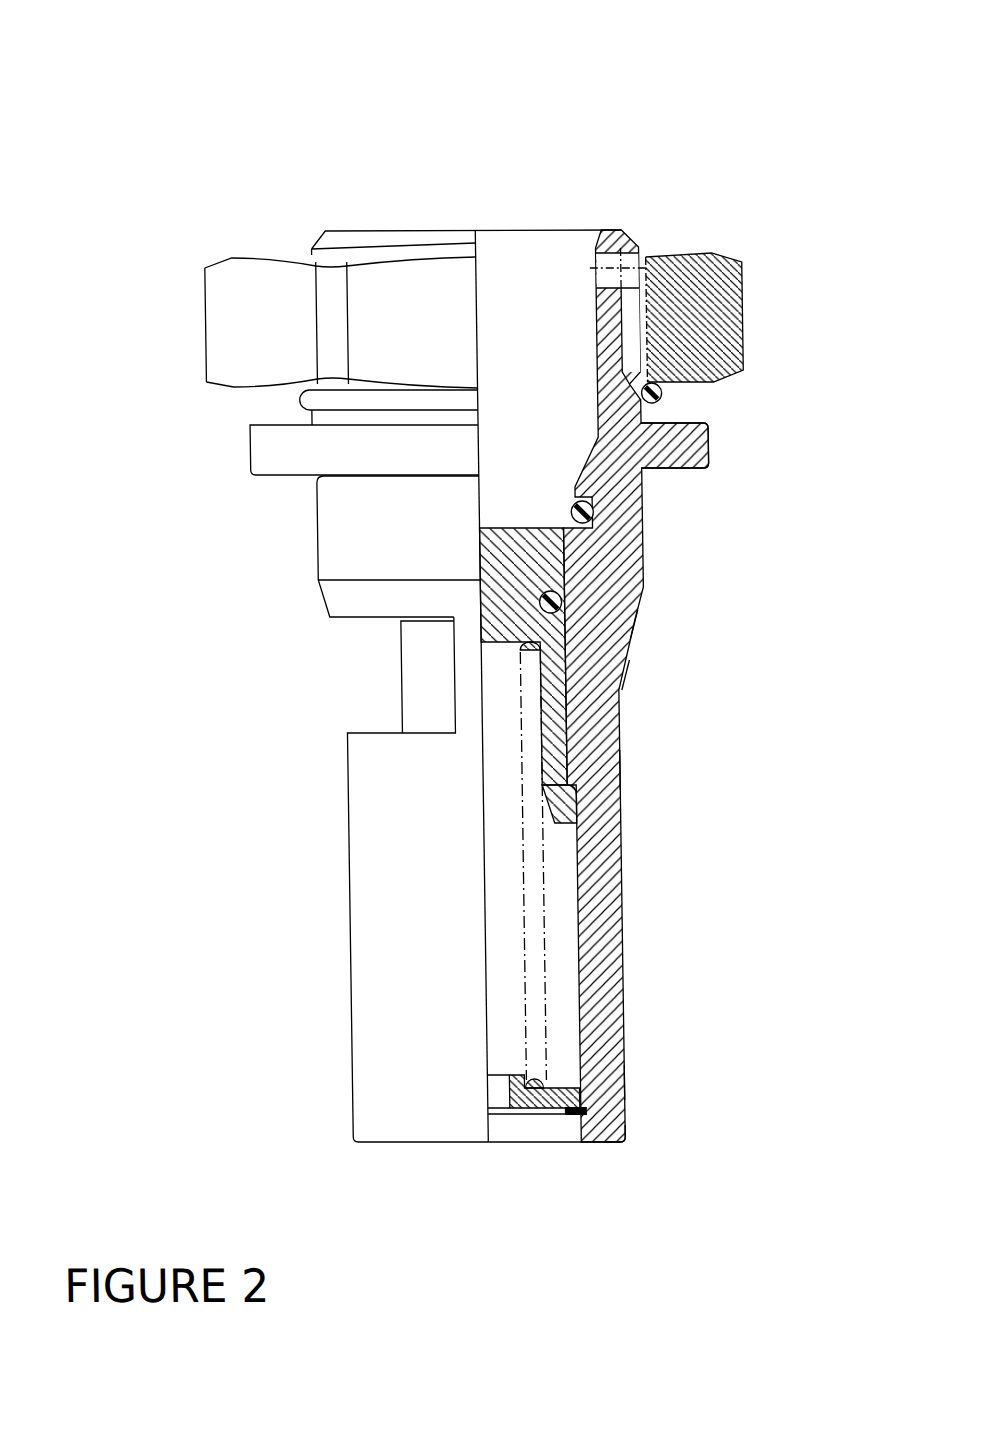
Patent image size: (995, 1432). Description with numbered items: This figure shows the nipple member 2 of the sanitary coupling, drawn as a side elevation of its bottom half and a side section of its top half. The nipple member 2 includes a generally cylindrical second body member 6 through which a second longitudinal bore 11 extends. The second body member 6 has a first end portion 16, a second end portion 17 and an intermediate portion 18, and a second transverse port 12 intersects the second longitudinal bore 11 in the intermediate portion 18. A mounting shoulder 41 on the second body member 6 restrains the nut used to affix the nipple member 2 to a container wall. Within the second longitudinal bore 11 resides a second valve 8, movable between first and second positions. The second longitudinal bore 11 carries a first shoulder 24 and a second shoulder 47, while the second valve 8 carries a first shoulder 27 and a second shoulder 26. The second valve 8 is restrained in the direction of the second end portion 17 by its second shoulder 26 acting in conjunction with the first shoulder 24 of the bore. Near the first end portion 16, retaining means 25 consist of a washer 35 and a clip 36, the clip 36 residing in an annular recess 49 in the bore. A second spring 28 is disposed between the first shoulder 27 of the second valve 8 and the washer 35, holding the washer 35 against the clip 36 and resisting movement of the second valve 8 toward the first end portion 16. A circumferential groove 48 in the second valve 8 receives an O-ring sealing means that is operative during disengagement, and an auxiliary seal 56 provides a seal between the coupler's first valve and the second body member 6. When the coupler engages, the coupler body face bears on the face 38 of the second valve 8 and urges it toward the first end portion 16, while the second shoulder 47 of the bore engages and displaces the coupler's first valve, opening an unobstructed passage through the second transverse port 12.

The nipple member 2 is at (620, 725).
The second body member 6 is at (616, 610).
The second valve 8 is at (646, 523).
The second longitudinal bore 11 is at (598, 327).
The second transverse port 12 is at (481, 655).
The first end portion 16 is at (428, 1143).
The second end portion 17 is at (404, 230).
The intermediate portion 18 is at (622, 679).
The first shoulder 24 is at (620, 770).
The retaining means 25 is at (619, 1083).
The second shoulder 26 is at (612, 772).
The first shoulder 27 is at (518, 647).
The second spring 28 is at (525, 928).
The washer 35 is at (505, 1097).
The clip 36 is at (531, 1114).
The face 38 is at (543, 528).
The mounting shoulder 41 is at (677, 423).
The second shoulder 47 is at (574, 514).
The circumferential groove 48 is at (563, 603).
The annular recess 49 is at (609, 1140).
The auxiliary seal 56 is at (578, 497).